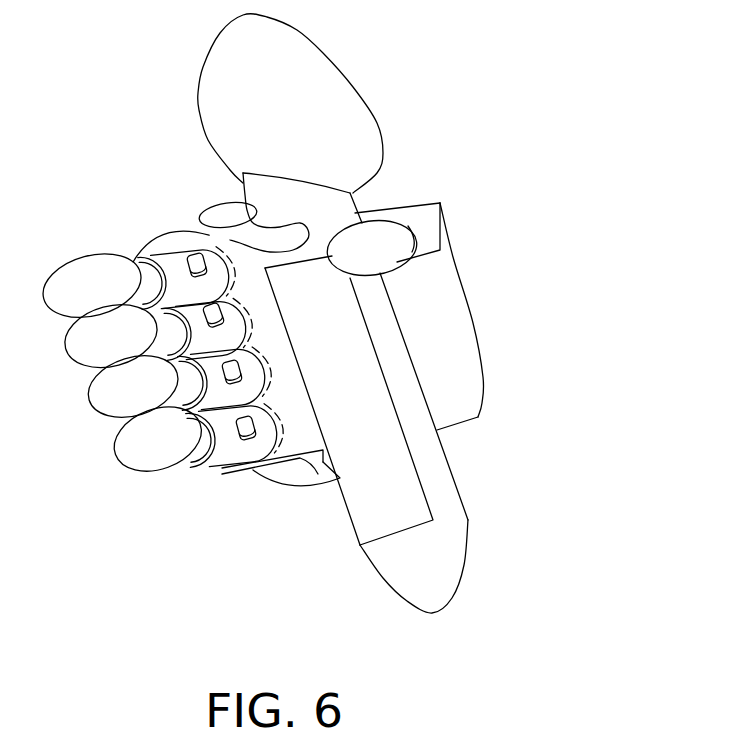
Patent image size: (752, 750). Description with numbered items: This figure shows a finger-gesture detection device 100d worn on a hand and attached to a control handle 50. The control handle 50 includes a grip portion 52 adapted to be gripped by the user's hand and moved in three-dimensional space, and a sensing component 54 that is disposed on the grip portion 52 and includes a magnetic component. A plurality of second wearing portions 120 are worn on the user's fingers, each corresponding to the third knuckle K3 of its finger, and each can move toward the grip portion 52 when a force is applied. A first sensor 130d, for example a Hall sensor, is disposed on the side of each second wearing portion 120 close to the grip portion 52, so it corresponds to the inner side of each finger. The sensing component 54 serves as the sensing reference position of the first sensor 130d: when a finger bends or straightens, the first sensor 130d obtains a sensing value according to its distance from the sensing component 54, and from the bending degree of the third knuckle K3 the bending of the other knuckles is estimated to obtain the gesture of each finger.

The finger-gesture detection device 100d is at (98, 228).
The control handle 50 is at (333, 119).
The grip portion 52 is at (433, 455).
The sensing component 54 is at (363, 507).
The third knuckle K3 is at (215, 252).
The second wearing portion 120 is at (183, 367).
The first sensor 130d is at (215, 373).